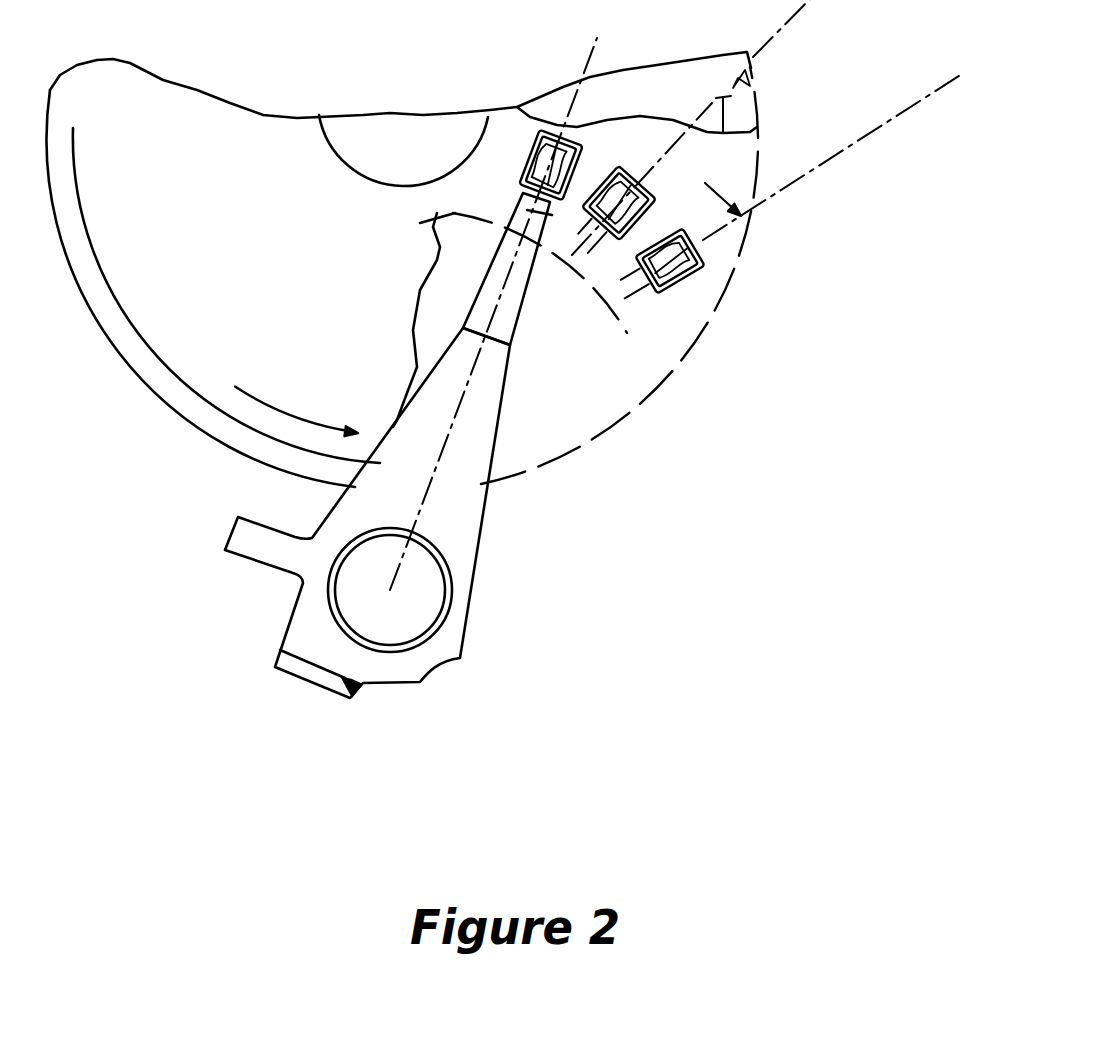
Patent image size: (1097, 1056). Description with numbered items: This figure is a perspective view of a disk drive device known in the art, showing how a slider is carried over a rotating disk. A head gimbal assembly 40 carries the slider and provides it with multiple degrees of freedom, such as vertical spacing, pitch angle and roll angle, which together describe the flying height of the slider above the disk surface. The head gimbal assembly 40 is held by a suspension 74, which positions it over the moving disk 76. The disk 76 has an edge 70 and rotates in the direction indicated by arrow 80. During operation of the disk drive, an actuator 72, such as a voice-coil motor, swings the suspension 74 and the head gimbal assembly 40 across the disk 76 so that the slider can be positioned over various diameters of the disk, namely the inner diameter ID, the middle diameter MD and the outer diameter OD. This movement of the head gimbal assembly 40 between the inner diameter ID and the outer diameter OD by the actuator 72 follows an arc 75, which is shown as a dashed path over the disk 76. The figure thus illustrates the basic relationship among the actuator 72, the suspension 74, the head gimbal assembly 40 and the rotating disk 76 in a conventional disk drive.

The head gimbal assembly 40 is at (572, 125).
The edge 70 is at (147, 387).
The actuator 72 is at (470, 610).
The suspension 74 is at (522, 316).
The arc 75 is at (621, 321).
The disk 76 is at (236, 277).
The arrow 80 is at (303, 418).
The inner diameter ID is at (554, 124).
The middle diameter MD is at (648, 190).
The outer diameter OD is at (710, 262).